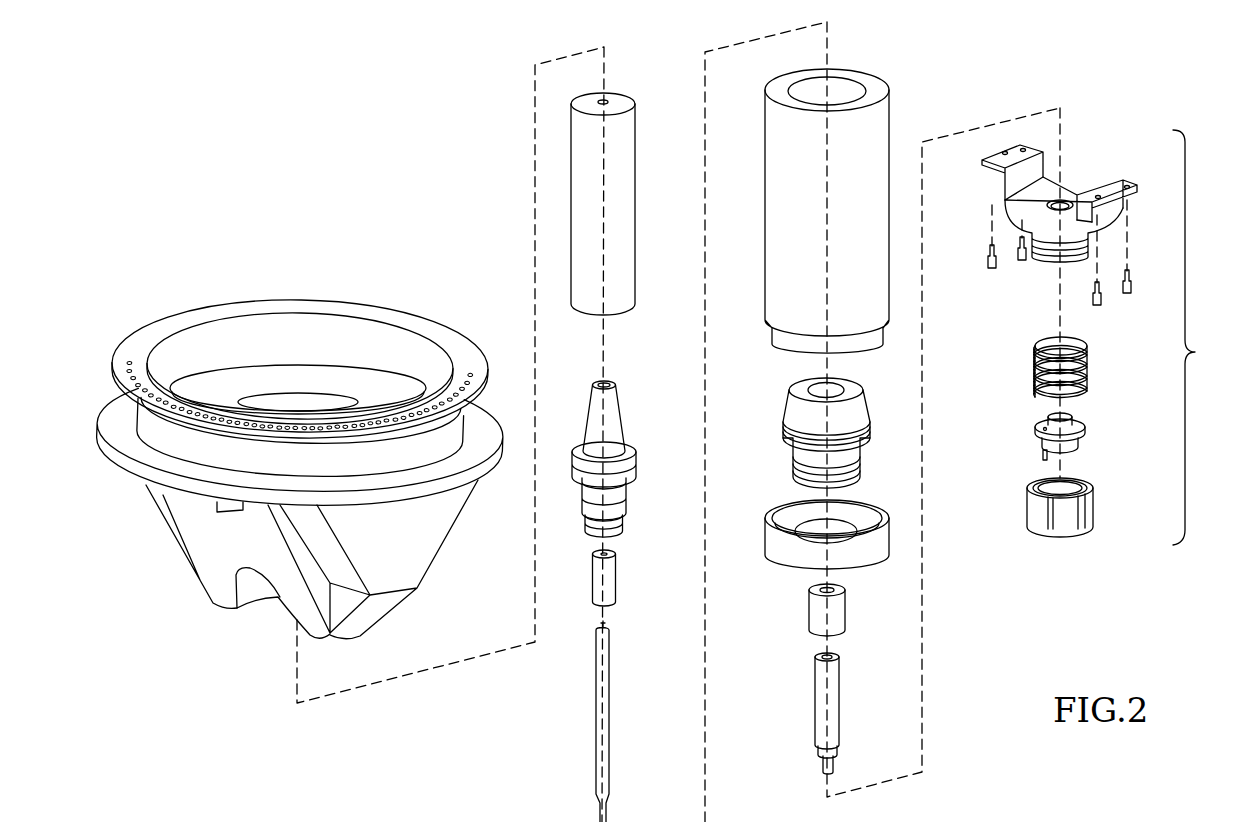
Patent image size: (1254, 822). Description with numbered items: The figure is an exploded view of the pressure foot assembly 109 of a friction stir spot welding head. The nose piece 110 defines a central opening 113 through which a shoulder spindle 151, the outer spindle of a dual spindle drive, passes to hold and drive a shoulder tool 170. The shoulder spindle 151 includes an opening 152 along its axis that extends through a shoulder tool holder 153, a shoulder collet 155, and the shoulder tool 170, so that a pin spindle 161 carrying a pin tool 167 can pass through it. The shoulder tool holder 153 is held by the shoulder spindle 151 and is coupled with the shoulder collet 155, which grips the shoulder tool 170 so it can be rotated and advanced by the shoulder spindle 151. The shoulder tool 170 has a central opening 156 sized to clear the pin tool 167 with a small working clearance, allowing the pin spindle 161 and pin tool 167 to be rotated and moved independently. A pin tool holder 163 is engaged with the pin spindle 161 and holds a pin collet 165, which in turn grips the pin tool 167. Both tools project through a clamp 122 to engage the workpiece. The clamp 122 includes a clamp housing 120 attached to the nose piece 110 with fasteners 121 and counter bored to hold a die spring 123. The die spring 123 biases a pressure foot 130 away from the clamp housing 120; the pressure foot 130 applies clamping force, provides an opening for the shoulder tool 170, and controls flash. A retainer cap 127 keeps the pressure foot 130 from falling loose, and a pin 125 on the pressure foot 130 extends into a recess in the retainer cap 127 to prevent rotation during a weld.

The pressure foot assembly 109 is at (221, 224).
The nose piece 110 is at (233, 609).
The central opening 113 is at (305, 404).
The clamp housing 120 is at (1105, 188).
The fasteners 121 is at (1132, 288).
The clamp 122 is at (1208, 337).
The die spring 123 is at (1088, 363).
The pin 125 is at (1040, 453).
The retainer cap 127 is at (1062, 528).
The pressure foot 130 is at (1086, 427).
The shoulder spindle 151 is at (878, 77).
The opening 152 is at (846, 52).
The shoulder tool holder 153 is at (807, 378).
The shoulder collet 155 is at (808, 612).
The central opening 156 is at (833, 653).
The pin spindle 161 is at (619, 92).
The pin tool holder 163 is at (621, 419).
The pin collet 165 is at (618, 578).
The pin tool 167 is at (596, 672).
The shoulder tool 170 is at (813, 708).